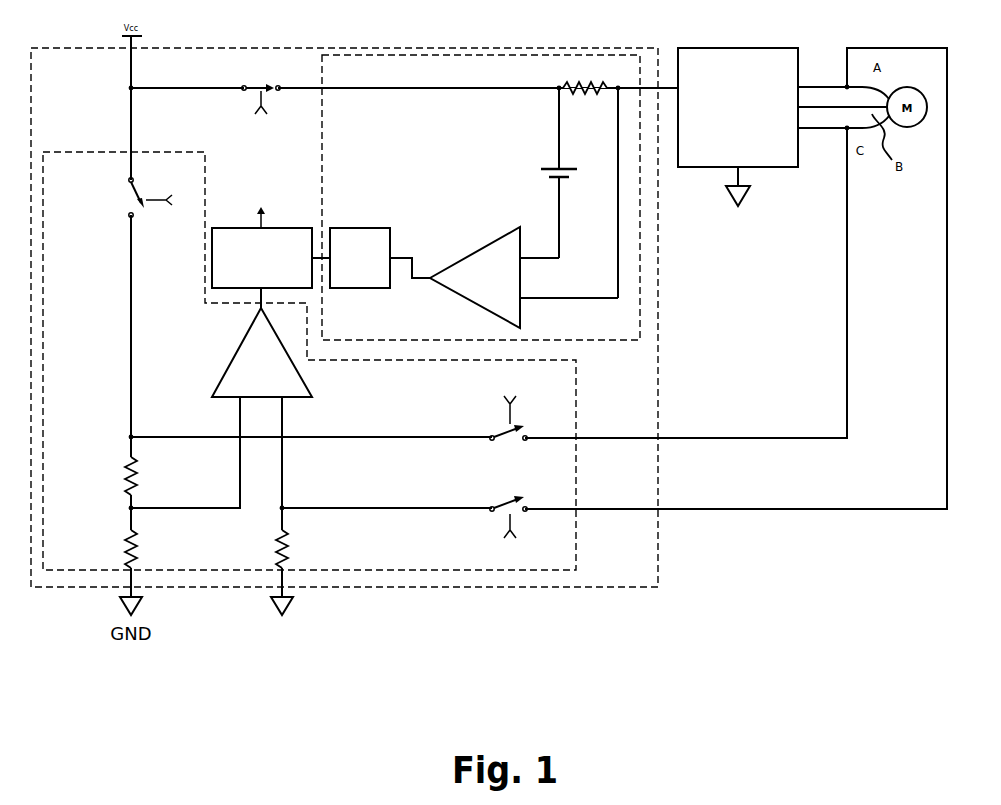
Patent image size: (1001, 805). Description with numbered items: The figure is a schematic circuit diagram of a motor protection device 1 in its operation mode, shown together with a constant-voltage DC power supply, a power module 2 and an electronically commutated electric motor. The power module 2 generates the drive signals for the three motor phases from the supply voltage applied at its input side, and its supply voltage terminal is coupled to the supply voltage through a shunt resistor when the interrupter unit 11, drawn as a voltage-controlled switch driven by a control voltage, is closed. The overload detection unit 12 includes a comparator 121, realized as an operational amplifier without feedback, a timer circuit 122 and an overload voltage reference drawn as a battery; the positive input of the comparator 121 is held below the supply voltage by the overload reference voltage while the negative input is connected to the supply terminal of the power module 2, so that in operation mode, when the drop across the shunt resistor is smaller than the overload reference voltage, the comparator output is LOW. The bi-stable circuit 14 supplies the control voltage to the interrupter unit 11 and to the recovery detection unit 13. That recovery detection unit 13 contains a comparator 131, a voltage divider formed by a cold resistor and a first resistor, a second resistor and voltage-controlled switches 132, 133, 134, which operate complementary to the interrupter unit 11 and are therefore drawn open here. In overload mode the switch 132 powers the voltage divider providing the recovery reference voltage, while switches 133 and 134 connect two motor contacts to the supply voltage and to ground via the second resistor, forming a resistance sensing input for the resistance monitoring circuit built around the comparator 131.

The motor protection device 1 is at (344, 317).
The power module 2 is at (738, 127).
The interrupter unit 11 is at (251, 96).
The overload detection unit 12 is at (481, 197).
The recovery detection unit 13 is at (309, 383).
The bi-stable circuit 14 is at (271, 242).
The comparator 121 is at (475, 277).
The timer circuit 122 is at (360, 258).
The comparator 131 is at (262, 352).
The voltage-controlled switch 132 is at (128, 205).
The voltage-controlled switch 133 is at (503, 447).
The voltage-controlled switch 134 is at (495, 520).